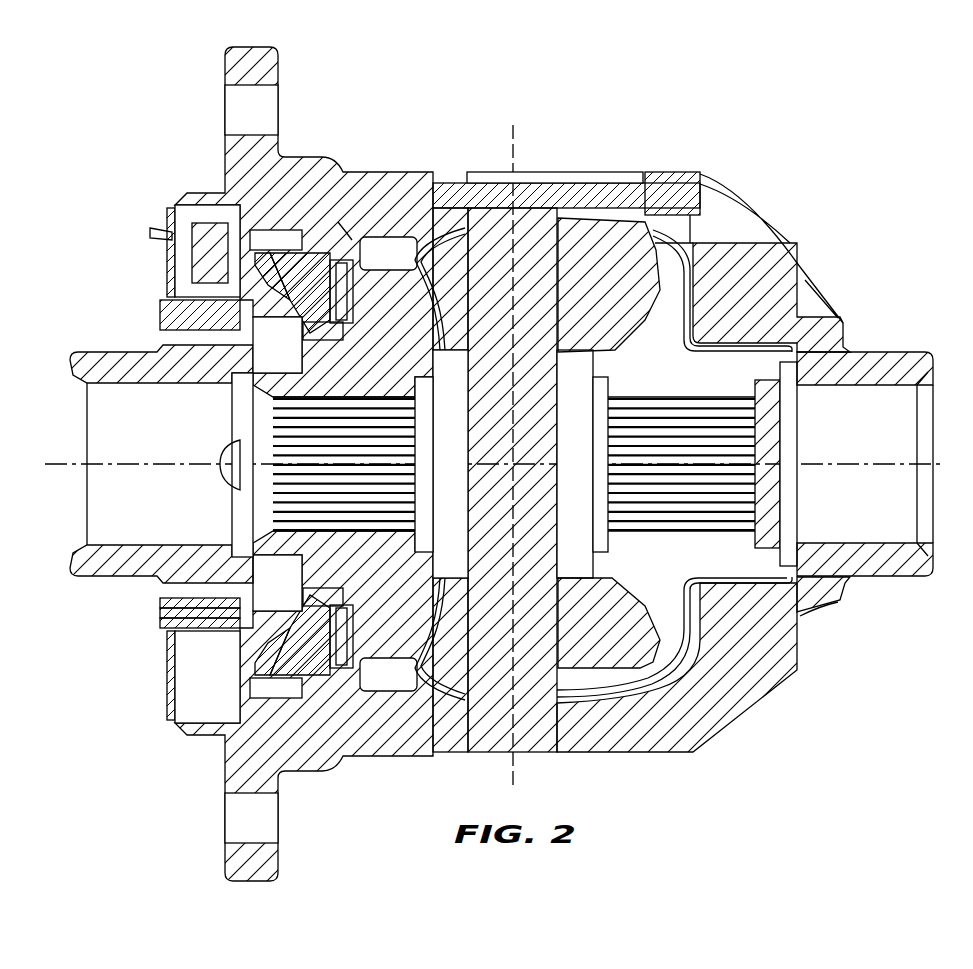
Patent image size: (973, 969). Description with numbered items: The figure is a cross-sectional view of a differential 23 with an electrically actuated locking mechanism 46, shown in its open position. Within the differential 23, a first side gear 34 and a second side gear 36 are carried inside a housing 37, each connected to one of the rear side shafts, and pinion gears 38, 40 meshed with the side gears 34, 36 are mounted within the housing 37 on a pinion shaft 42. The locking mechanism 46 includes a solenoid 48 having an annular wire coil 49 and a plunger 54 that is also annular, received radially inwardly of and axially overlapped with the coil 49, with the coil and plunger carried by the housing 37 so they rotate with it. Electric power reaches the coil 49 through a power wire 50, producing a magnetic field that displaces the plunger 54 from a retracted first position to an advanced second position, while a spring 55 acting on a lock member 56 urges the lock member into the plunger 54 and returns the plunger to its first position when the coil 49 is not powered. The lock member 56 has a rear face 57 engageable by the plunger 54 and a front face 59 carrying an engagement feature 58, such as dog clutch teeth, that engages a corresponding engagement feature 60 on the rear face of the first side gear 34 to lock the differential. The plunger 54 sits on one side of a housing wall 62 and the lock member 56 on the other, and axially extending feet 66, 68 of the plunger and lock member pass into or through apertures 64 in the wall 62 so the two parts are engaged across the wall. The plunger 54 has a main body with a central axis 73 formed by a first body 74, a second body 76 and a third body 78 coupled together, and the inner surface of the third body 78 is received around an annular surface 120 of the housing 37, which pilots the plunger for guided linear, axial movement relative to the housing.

The differential 23 is at (703, 160).
The first side gear 34 is at (268, 388).
The second side gear 36 is at (762, 392).
The housing 37 is at (428, 185).
The pinion gear 38 is at (615, 268).
The pinion gear 40 is at (600, 665).
The pinion shaft 42 is at (535, 212).
The locking mechanism 46 is at (160, 290).
The solenoid 48 is at (178, 732).
The wire coil 49 is at (210, 262).
The power wire 50 is at (160, 232).
The plunger 54 is at (175, 330).
The spring 55 is at (338, 330).
The lock member 56 is at (308, 260).
The rear face 57 is at (218, 268).
The engagement feature 58 is at (350, 265).
The front face 59 is at (345, 232).
The engagement feature 60 is at (350, 275).
The housing wall 62 is at (275, 640).
The apertures 64 is at (298, 240).
The feet 66 is at (258, 302).
The feet 68 is at (277, 258).
The central axis 73 is at (58, 465).
The first body 74 is at (185, 630).
The second body 76 is at (170, 616).
The third body 78 is at (176, 608).
The annular surface 120 is at (185, 348).